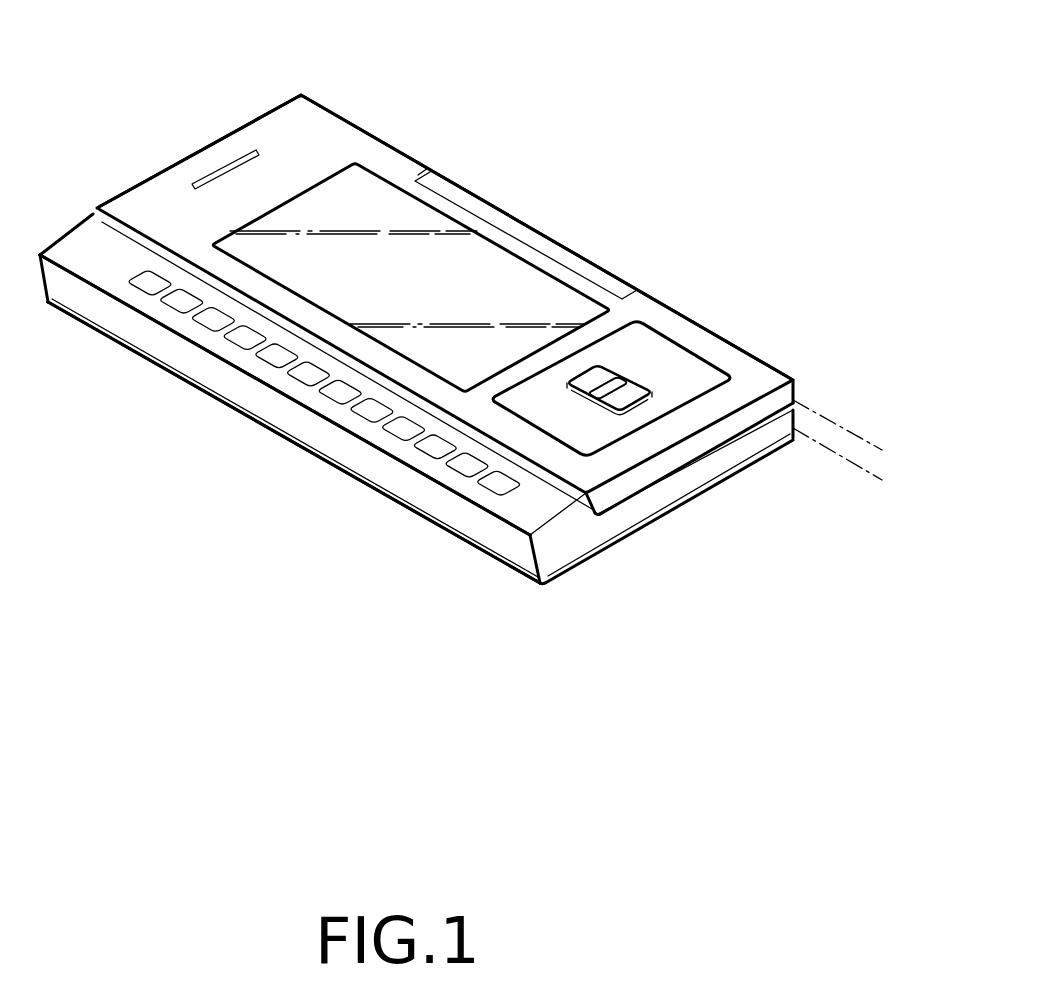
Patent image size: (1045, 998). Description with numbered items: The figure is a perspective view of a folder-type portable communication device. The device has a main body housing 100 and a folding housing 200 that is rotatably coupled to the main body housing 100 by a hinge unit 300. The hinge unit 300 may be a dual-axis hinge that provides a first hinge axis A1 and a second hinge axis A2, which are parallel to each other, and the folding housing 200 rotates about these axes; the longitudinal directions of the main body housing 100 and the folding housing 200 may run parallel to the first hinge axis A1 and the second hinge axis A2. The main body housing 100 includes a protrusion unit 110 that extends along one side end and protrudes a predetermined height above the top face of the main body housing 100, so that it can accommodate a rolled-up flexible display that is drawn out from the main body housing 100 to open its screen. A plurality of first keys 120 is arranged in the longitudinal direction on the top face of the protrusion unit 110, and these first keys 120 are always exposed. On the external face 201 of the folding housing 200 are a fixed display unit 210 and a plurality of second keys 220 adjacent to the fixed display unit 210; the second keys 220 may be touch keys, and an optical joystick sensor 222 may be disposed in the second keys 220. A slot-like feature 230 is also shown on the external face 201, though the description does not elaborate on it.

The main body housing 100 is at (232, 435).
The protrusion unit 110 is at (557, 542).
The first keys 120 is at (412, 437).
The folding housing 200 is at (788, 347).
The external face 201 is at (320, 140).
The fixed display unit 210 is at (365, 192).
The second keys 220 is at (670, 363).
The optical joystick sensor 222 is at (603, 375).
The speaker slot 230 is at (218, 168).
The hinge unit 300 is at (530, 196).
The first hinge axis A1 is at (838, 457).
The second hinge axis A2 is at (848, 430).